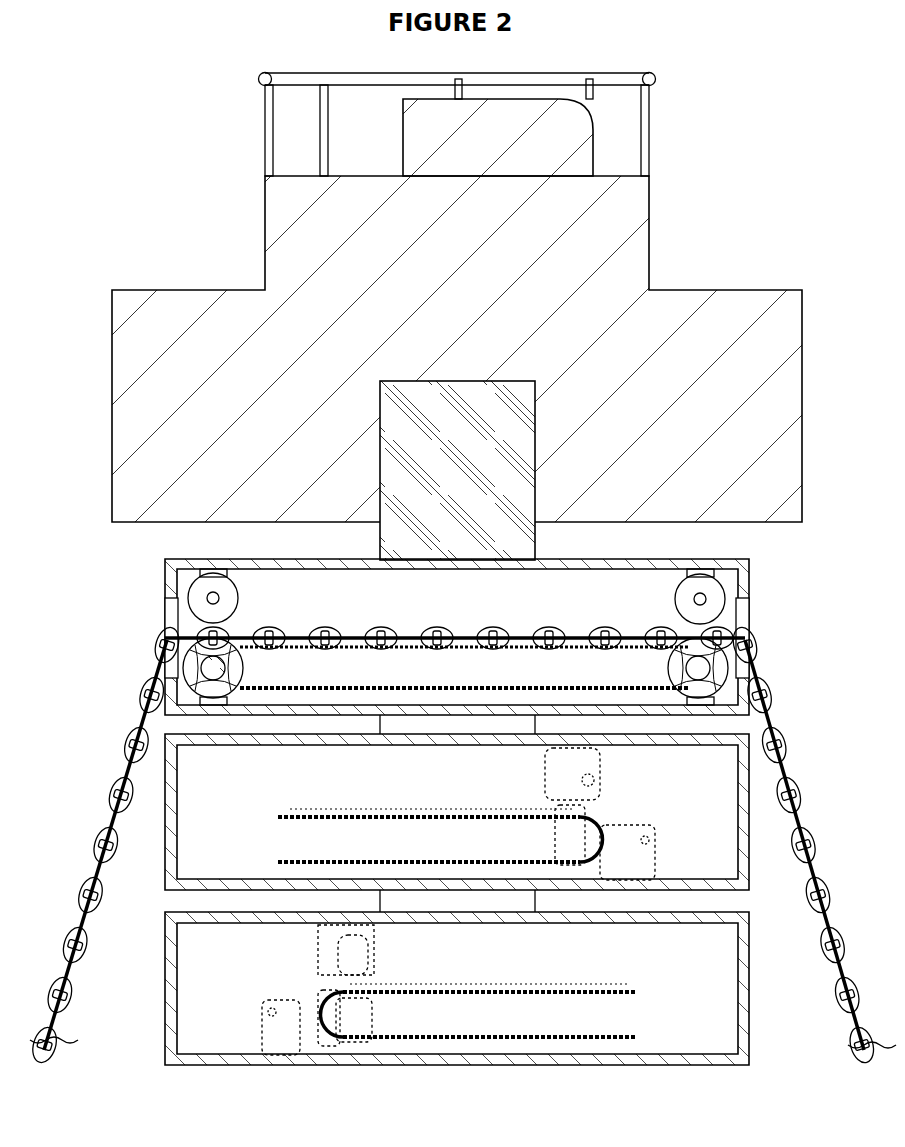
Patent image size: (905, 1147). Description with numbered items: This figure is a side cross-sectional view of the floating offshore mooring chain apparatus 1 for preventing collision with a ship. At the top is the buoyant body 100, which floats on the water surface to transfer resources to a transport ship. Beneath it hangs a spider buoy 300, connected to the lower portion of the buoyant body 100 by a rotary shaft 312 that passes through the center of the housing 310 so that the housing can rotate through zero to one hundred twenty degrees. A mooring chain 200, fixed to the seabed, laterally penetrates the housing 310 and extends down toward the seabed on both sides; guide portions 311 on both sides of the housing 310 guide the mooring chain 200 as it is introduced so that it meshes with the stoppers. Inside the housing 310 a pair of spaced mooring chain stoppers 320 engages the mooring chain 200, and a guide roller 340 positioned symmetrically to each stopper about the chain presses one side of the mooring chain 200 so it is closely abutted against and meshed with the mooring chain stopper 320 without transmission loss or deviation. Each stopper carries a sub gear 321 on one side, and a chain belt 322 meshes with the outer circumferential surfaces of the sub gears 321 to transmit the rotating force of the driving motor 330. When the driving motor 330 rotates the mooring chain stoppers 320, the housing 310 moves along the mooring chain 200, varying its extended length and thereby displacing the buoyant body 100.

The floating offshore mooring chain apparatus 1 is at (793, 167).
The buoyant body 100 is at (175, 272).
The mooring chain 200 is at (86, 762).
The spider buoy 300 is at (802, 578).
The housing 310 is at (170, 562).
The guide portion 311 is at (168, 606).
The rotary shaft 312 is at (407, 475).
The mooring chain stopper 320 is at (700, 694).
The sub gear 321 is at (348, 1010).
The chain belt 322 is at (653, 692).
The driving motor 330 is at (330, 1028).
The guide roller 340 is at (706, 600).